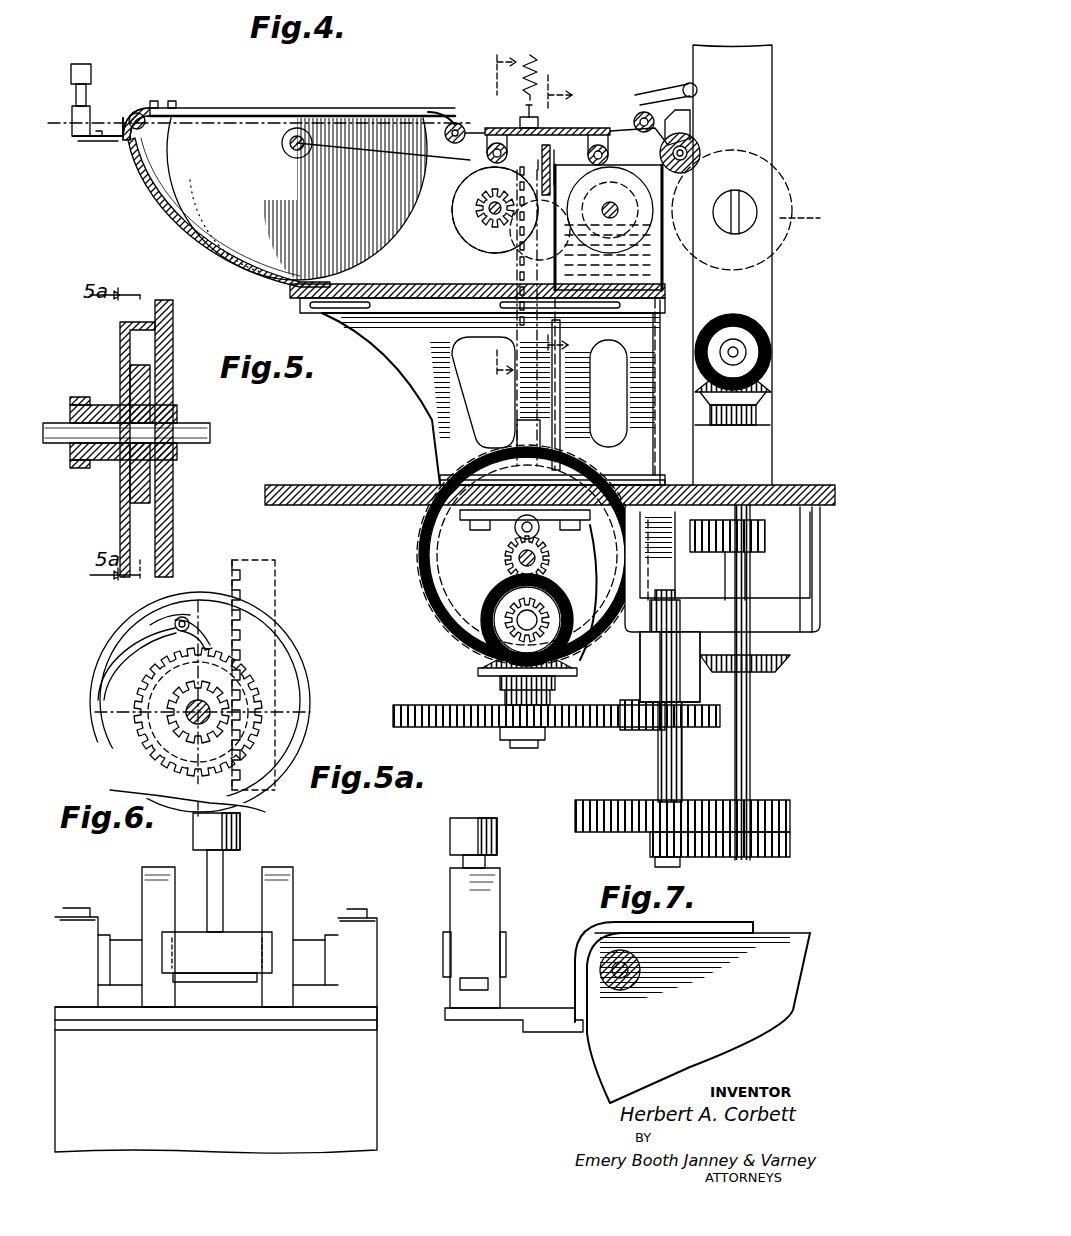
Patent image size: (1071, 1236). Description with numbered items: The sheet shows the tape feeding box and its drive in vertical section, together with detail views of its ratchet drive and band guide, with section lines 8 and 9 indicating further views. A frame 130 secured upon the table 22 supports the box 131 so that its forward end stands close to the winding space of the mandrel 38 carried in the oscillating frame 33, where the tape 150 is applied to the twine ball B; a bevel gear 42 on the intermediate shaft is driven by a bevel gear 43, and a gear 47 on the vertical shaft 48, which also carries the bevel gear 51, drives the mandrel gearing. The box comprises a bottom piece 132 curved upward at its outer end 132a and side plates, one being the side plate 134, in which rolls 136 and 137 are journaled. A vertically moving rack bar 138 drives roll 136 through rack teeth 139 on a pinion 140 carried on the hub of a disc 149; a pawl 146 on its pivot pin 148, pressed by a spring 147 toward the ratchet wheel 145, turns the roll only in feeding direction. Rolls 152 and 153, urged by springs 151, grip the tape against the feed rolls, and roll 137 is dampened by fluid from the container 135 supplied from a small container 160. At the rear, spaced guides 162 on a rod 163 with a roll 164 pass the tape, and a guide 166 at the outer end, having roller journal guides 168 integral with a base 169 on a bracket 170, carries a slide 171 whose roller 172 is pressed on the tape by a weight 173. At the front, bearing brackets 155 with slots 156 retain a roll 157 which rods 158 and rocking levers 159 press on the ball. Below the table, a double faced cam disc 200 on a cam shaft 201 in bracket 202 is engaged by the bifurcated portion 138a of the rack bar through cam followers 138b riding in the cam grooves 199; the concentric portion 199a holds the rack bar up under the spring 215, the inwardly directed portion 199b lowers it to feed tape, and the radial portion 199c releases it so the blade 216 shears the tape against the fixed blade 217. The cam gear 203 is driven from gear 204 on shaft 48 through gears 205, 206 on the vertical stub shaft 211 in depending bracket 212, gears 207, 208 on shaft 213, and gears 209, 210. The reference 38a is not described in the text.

In FIG. 4, the section line 8 is at (569, 213).
In FIG. 4, the section line 9 is at (489, 204).
In FIG. 4, the table 22 is at (395, 480).
In FIG. 4, the oscillating frame 33 is at (745, 75).
In FIG. 4, the mandrel or spindle 38 is at (740, 210).
In FIG. 4, the cam roller 38a is at (757, 212).
In FIG. 4, the bevel gear 42 is at (770, 340).
In FIG. 4, the bevel gear 43 is at (765, 385).
In FIG. 4, the gear 47 is at (765, 540).
In FIG. 4, the vertical shaft 48 is at (750, 725).
In FIG. 4, the bevel gear 51 is at (780, 670).
In FIG. 4, the frame 130 is at (300, 300).
In FIG. 4, the box 131 is at (450, 405).
In FIG. 4, the bottom piece 132 is at (410, 322).
In FIG. 4, the outer end of bottom piece 132a is at (158, 185).
In FIG. 5, the side plate 134 is at (173, 325).
In FIG. 4, the container 135 is at (662, 270).
In FIG. 4, the roll 136 is at (455, 230).
In FIG. 4, the roll 137 is at (640, 228).
In FIG. 4, the rack bar 138 is at (522, 122).
In FIG. 5A, the rack bar 138 is at (282, 560).
In FIG. 4, the bifurcated portion 138a is at (640, 462).
In FIG. 4, the cam followers 138b is at (680, 512).
In FIG. 4, the rack teeth 139 is at (480, 250).
In FIG. 4, the pinion 140 is at (495, 240).
In FIG. 5, the pinion 140 is at (78, 397).
In FIG. 5A, the pinion 140 is at (175, 725).
In FIG. 5, the ratchet wheel 145 is at (140, 385).
In FIG. 5A, the ratchet wheel 145 is at (145, 710).
In FIG. 5A, the pawl 146 is at (195, 620).
In FIG. 5A, the spring 147 is at (118, 655).
In FIG. 5A, the pivot pin 148 is at (172, 618).
In FIG. 5, the disc 149 is at (120, 520).
In FIG. 5A, the disc 149 is at (300, 685).
In FIG. 4, the tape 150 is at (400, 112).
In FIG. 4, the springs 151 is at (475, 128).
In FIG. 4, the roll 152 is at (488, 158).
In FIG. 4, the roll 153 is at (622, 150).
In FIG. 4, the bearing brackets 155 is at (700, 118).
In FIG. 4, the slots 156 is at (695, 138).
In FIG. 4, the roll 157 is at (795, 148).
In FIG. 4, the rods 158 is at (690, 120).
In FIG. 4, the rocking levers 159 is at (690, 85).
In FIG. 4, the container 160 is at (608, 345).
In FIG. 4, the guides 162 is at (262, 105).
In FIG. 4, the rod 163 is at (335, 175).
In FIG. 4, the roll 164 is at (290, 152).
In FIG. 4, the guide 166 is at (92, 94).
In FIG. 6, the roller journal guides 168 is at (165, 860).
In FIG. 7, the roller journal guides 168 is at (480, 895).
In FIG. 6, the base 169 is at (260, 995).
In FIG. 4, the bracket 170 is at (112, 140).
In FIG. 7, the bracket 170 is at (627, 1012).
In FIG. 6, the slide 171 is at (217, 957).
In FIG. 7, the slide 171 is at (506, 950).
In FIG. 6, the roller 172 is at (210, 980).
In FIG. 6, the weight 173 is at (240, 828).
In FIG. 7, the weight 173 is at (450, 835).
In FIG. 4, the cam grooves 199 is at (424, 625).
In FIG. 4, the concentric portion 199a is at (445, 515).
In FIG. 4, the inwardly directed portion 199b is at (585, 655).
In FIG. 4, the radial portion 199c is at (425, 470).
In FIG. 4, the cam disc 200 is at (425, 568).
In FIG. 4, the cam shaft 201 is at (435, 585).
In FIG. 4, the bracket 202 is at (690, 560).
In FIG. 4, the gear 203 is at (500, 540).
In FIG. 4, the gear 204 is at (775, 862).
In FIG. 4, the gear 205 is at (720, 805).
In FIG. 4, the gear 206 is at (630, 730).
In FIG. 4, the gear 207 is at (455, 727).
In FIG. 4, the gear 208 is at (570, 678).
In FIG. 4, the gear 209 is at (485, 655).
In FIG. 4, the gear 210 is at (505, 635).
In FIG. 4, the vertical stub shaft 211 is at (665, 770).
In FIG. 4, the depending bracket 212 is at (700, 610).
In FIG. 4, the shaft 213 is at (505, 680).
In FIG. 4, the spring 215 is at (540, 66).
In FIG. 4, the blade 216 is at (515, 175).
In FIG. 4, the fixed blade 217 is at (548, 170).
In FIG. 4, the ball B is at (803, 215).